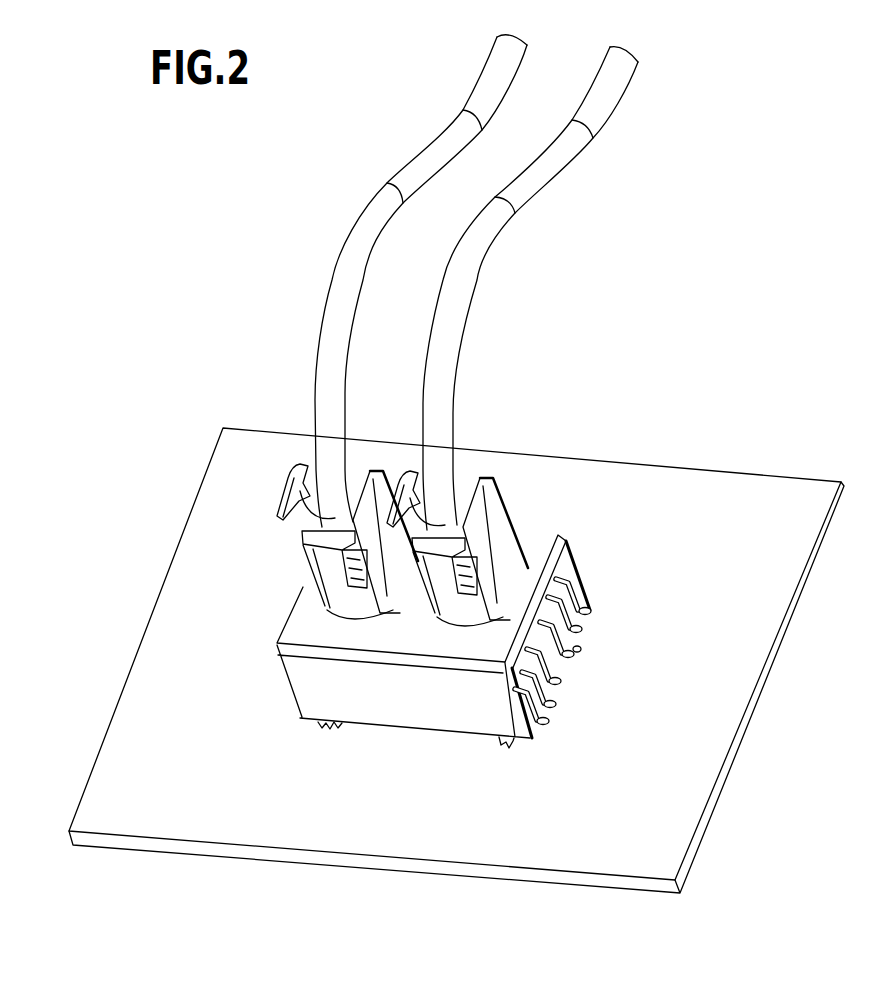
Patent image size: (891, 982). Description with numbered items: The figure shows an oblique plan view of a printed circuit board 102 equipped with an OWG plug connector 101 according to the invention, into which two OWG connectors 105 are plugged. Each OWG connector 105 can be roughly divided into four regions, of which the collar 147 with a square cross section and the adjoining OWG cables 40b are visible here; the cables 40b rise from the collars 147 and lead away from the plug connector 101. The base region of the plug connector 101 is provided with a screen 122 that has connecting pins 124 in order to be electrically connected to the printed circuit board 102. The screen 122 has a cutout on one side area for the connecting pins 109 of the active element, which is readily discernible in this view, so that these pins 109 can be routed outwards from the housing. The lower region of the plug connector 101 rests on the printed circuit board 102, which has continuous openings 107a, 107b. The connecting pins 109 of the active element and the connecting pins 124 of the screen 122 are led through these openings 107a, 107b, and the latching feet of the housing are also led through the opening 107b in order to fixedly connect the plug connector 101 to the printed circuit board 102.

The OWG cables 40b is at (443, 358).
The OWG plug connector 101 is at (460, 613).
The printed circuit board 102 is at (680, 498).
The OWG connectors 105 is at (473, 470).
The opening 107a is at (568, 680).
The opening 107b is at (510, 747).
The connecting pins of the active element 109 is at (577, 648).
The screen 122 is at (530, 543).
The connecting pins of the screen 124 is at (330, 728).
The collar 147 is at (300, 533).